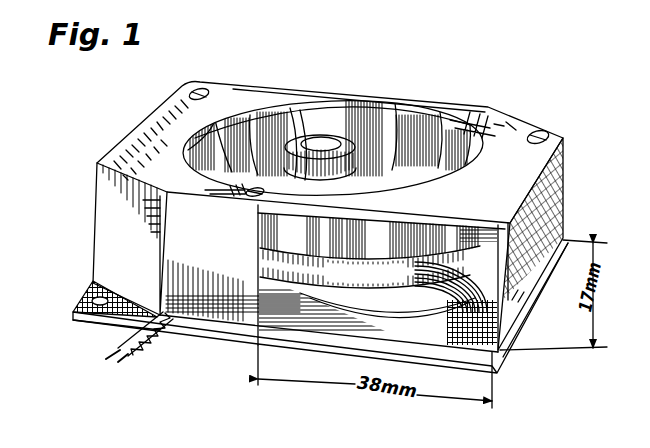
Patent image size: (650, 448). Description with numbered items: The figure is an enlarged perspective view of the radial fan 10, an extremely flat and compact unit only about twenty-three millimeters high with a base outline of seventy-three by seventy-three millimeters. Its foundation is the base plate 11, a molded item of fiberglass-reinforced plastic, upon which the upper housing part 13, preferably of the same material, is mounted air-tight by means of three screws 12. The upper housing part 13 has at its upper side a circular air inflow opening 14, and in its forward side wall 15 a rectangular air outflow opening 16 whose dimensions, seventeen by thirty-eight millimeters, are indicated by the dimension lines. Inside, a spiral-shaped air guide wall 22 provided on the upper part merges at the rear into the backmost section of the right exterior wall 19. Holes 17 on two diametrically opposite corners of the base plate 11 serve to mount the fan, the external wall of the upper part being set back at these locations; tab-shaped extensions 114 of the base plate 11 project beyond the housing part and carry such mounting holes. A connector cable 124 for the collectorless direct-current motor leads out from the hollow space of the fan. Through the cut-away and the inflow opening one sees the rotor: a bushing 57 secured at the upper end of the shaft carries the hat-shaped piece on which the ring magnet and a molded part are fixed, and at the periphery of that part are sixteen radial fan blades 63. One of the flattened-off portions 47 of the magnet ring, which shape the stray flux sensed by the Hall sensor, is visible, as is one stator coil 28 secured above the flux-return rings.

The radial fan 10 is at (150, 99).
The base plate 11 is at (58, 313).
The screws 12 is at (200, 93).
The upper housing part 13 is at (90, 255).
The air inflow opening 14 is at (415, 117).
The forward side wall 15 is at (222, 287).
The air outflow opening 16 is at (427, 270).
The holes 17 is at (88, 300).
The right exterior wall 19 is at (565, 222).
The air guide wall 22 is at (268, 135).
The coil 28 is at (498, 300).
The flattened-off portions 47 is at (503, 357).
The bushing 57 is at (322, 213).
The radial fan blades 63 is at (357, 127).
The tab-shaped extensions 114 is at (88, 321).
The connector cable 124 is at (128, 347).